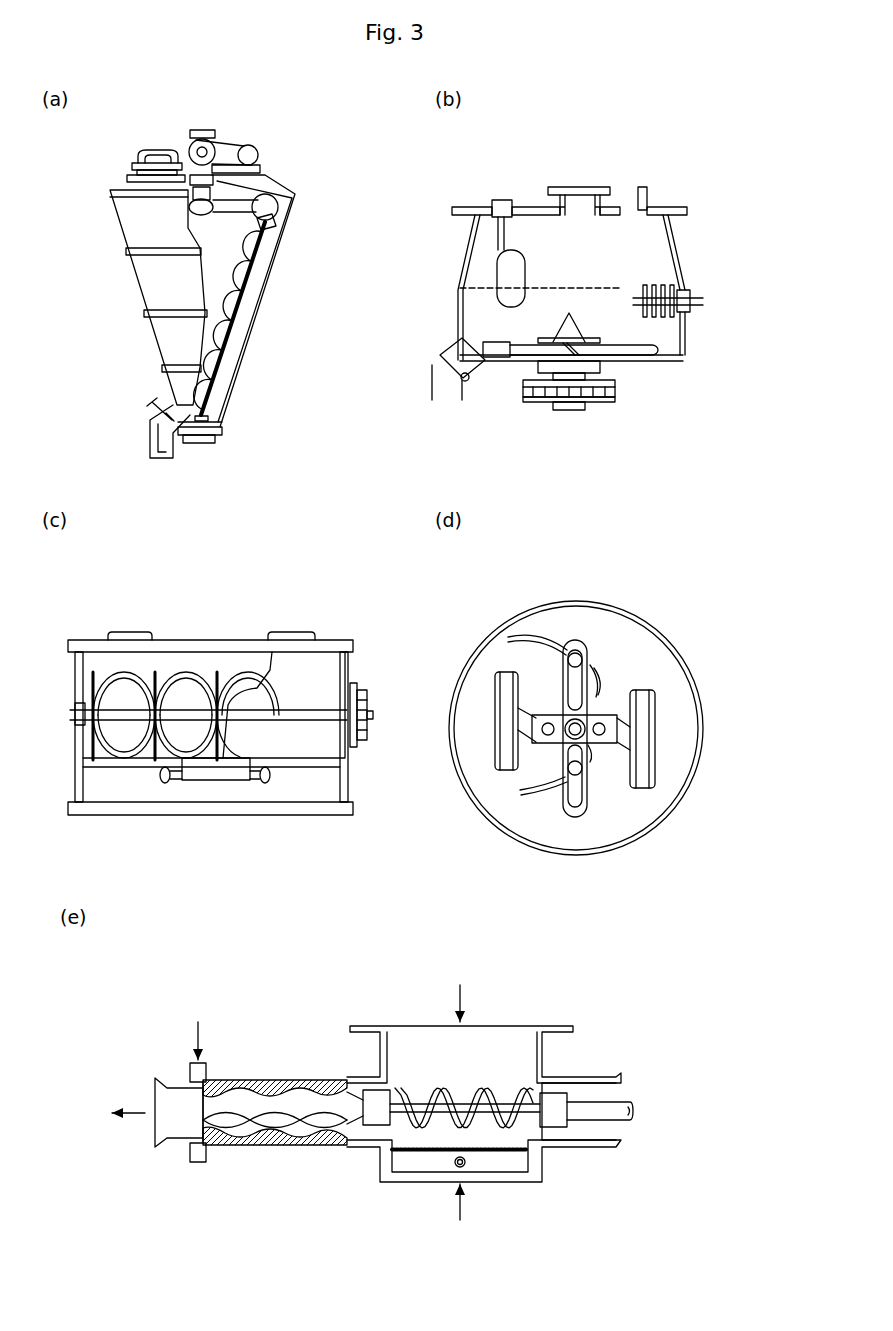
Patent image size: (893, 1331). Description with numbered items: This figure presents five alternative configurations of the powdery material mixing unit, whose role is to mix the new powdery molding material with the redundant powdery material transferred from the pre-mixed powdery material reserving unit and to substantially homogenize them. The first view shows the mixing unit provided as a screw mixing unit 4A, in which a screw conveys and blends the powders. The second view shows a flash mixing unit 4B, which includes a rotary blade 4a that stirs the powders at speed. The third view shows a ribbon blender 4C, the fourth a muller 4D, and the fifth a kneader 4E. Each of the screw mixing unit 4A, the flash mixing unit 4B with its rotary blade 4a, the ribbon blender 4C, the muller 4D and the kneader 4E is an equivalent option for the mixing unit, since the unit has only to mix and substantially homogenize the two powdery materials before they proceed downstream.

The screw mixing unit 4A is at (283, 267).
The flash mixing unit 4B is at (598, 298).
The rotary blade 4a is at (655, 340).
The ribbon blender 4C is at (247, 617).
The muller 4D is at (657, 606).
The kneader 4E is at (521, 1002).